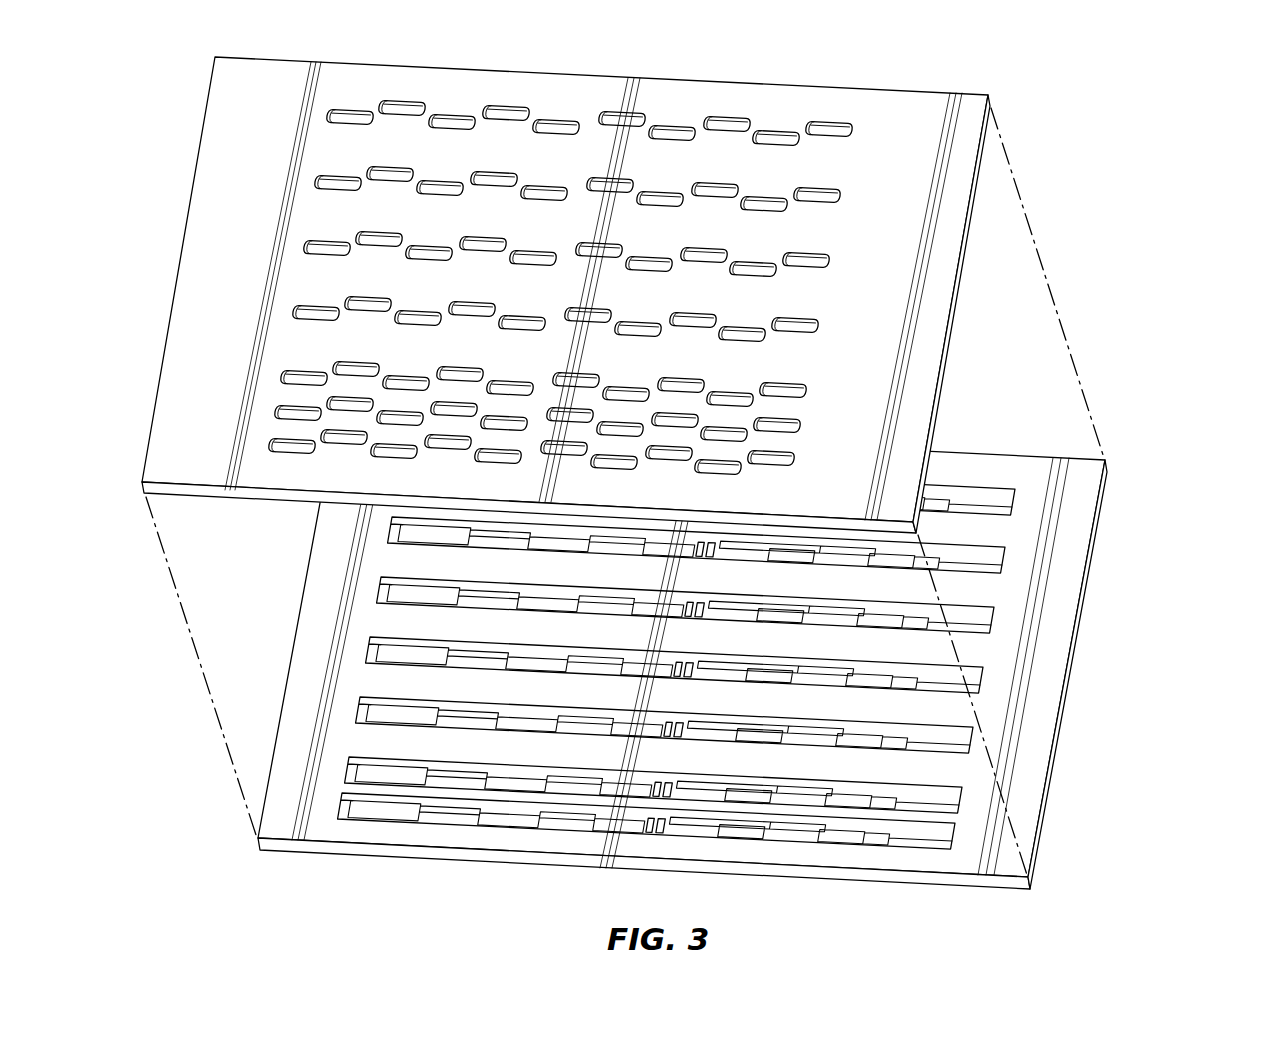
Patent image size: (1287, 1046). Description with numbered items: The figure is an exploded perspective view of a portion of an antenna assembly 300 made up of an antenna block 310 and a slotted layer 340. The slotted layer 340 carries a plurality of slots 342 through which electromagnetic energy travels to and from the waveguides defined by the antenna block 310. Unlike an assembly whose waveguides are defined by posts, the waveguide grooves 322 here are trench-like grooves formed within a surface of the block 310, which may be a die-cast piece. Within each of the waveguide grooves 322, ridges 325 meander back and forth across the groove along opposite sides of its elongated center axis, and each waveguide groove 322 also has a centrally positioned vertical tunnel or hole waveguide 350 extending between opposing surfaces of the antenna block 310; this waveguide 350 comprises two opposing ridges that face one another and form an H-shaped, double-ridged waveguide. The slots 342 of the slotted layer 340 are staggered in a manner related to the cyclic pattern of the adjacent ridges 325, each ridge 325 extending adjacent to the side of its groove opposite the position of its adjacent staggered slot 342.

The antenna assembly 300 is at (704, 493).
The antenna block 310 is at (730, 663).
The waveguide grooves 322 is at (982, 482).
The ridges 325 is at (798, 831).
The slotted layer 340 is at (588, 292).
The slots 342 is at (840, 122).
The vertical tunnel waveguide 350 is at (652, 835).